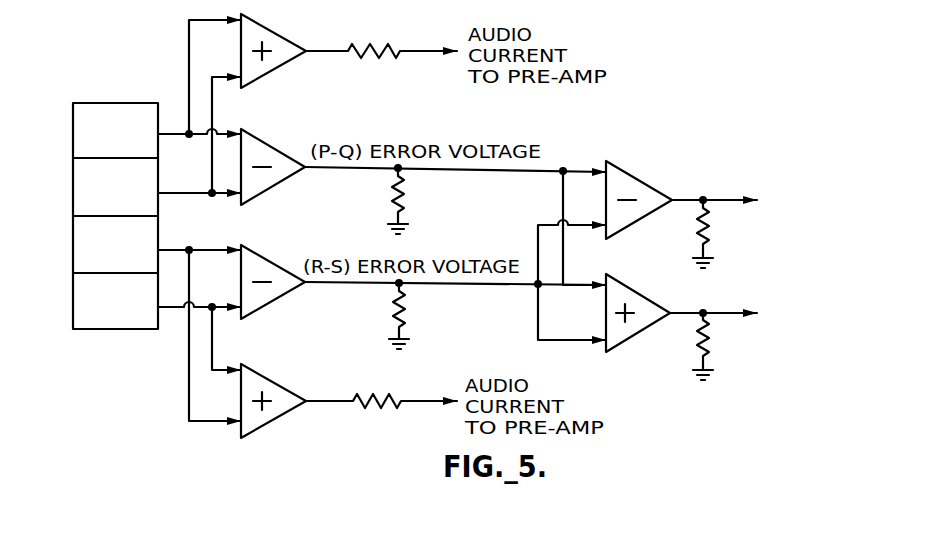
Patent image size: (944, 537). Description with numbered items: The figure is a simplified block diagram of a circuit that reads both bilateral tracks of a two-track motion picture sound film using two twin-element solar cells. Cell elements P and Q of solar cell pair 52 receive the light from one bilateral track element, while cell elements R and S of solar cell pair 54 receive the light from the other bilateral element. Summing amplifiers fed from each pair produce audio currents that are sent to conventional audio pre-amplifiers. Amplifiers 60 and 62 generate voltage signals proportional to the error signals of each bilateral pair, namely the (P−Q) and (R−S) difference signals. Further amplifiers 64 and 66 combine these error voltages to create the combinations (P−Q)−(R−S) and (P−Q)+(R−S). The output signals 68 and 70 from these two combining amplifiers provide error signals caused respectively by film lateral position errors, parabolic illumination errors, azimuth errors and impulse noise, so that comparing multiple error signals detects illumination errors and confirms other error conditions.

The solar cell pair 52 is at (68, 103).
The solar cell pair 54 is at (68, 217).
The amplifier 60 is at (266, 142).
The amplifier 62 is at (268, 299).
The amplifier 64 is at (645, 162).
The amplifier 66 is at (627, 342).
The output signal 68 is at (727, 202).
The output signal 70 is at (722, 317).